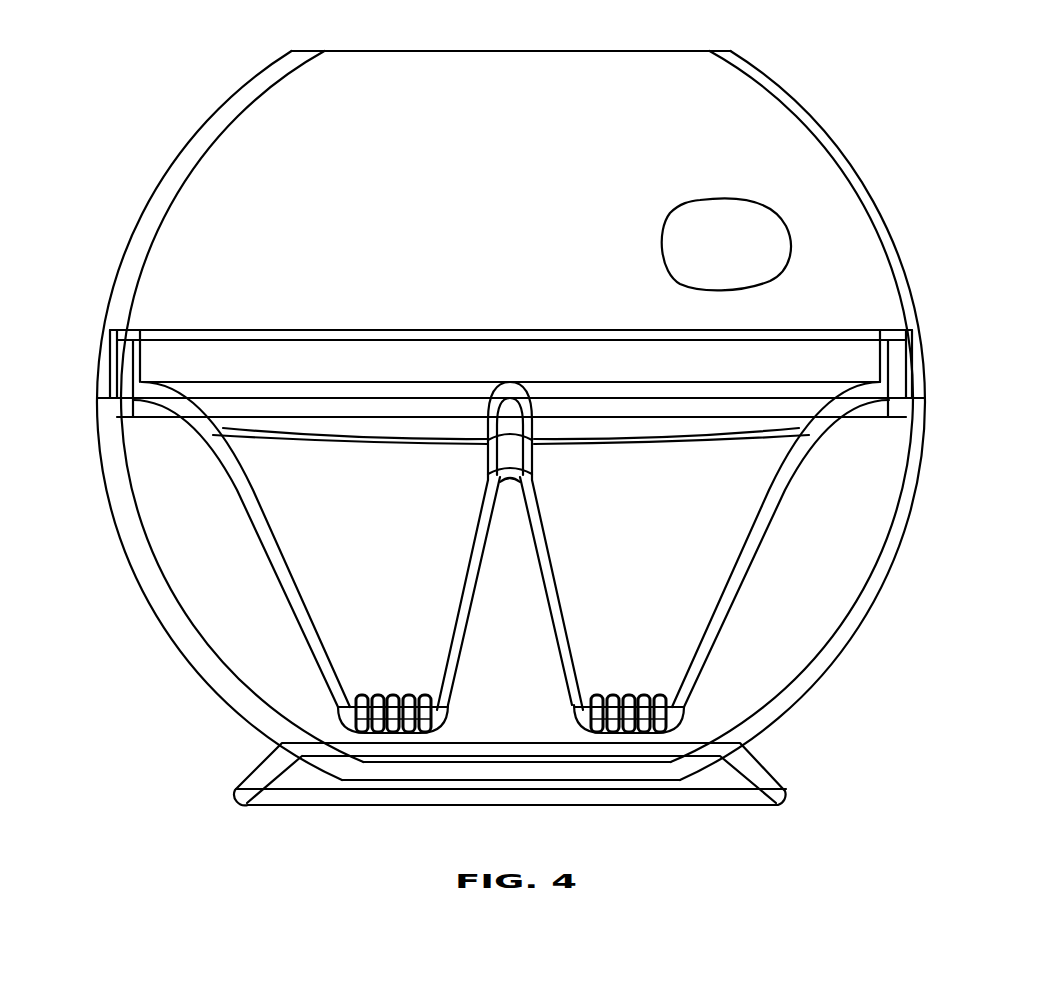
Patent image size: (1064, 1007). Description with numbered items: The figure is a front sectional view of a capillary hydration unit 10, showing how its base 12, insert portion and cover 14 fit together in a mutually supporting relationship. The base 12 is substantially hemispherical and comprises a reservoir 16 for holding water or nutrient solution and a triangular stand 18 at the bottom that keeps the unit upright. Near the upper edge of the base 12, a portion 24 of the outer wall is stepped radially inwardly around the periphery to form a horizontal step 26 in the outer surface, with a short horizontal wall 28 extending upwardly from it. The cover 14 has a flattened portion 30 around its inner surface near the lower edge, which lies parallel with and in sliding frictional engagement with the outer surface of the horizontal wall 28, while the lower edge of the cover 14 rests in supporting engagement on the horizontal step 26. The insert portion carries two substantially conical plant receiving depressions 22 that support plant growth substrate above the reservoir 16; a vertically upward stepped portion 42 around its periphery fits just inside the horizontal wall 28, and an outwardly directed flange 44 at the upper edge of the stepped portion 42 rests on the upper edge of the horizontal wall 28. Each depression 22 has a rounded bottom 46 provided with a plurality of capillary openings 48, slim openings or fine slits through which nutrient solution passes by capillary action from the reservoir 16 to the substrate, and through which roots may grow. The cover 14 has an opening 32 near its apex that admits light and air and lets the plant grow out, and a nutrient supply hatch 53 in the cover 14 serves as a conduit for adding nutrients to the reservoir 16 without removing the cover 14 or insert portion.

The capillary hydration unit 10 is at (1048, 281).
The base 12 is at (903, 541).
The cover 14 is at (893, 250).
The reservoir 16 is at (798, 652).
The stand 18 is at (765, 768).
The plant receiving depression 22 is at (386, 545).
The portion of outer wall 24 is at (133, 418).
The horizontal step 26 is at (100, 402).
The horizontal wall 28 is at (125, 355).
The flattened portion 30 is at (108, 392).
The opening 32 is at (598, 51).
The stepped portion 42 is at (140, 366).
The flange 44 is at (150, 331).
The rounded bottom 46 is at (440, 708).
The capillary openings 48 is at (385, 695).
The nutrient supply hatch 53 is at (792, 243).